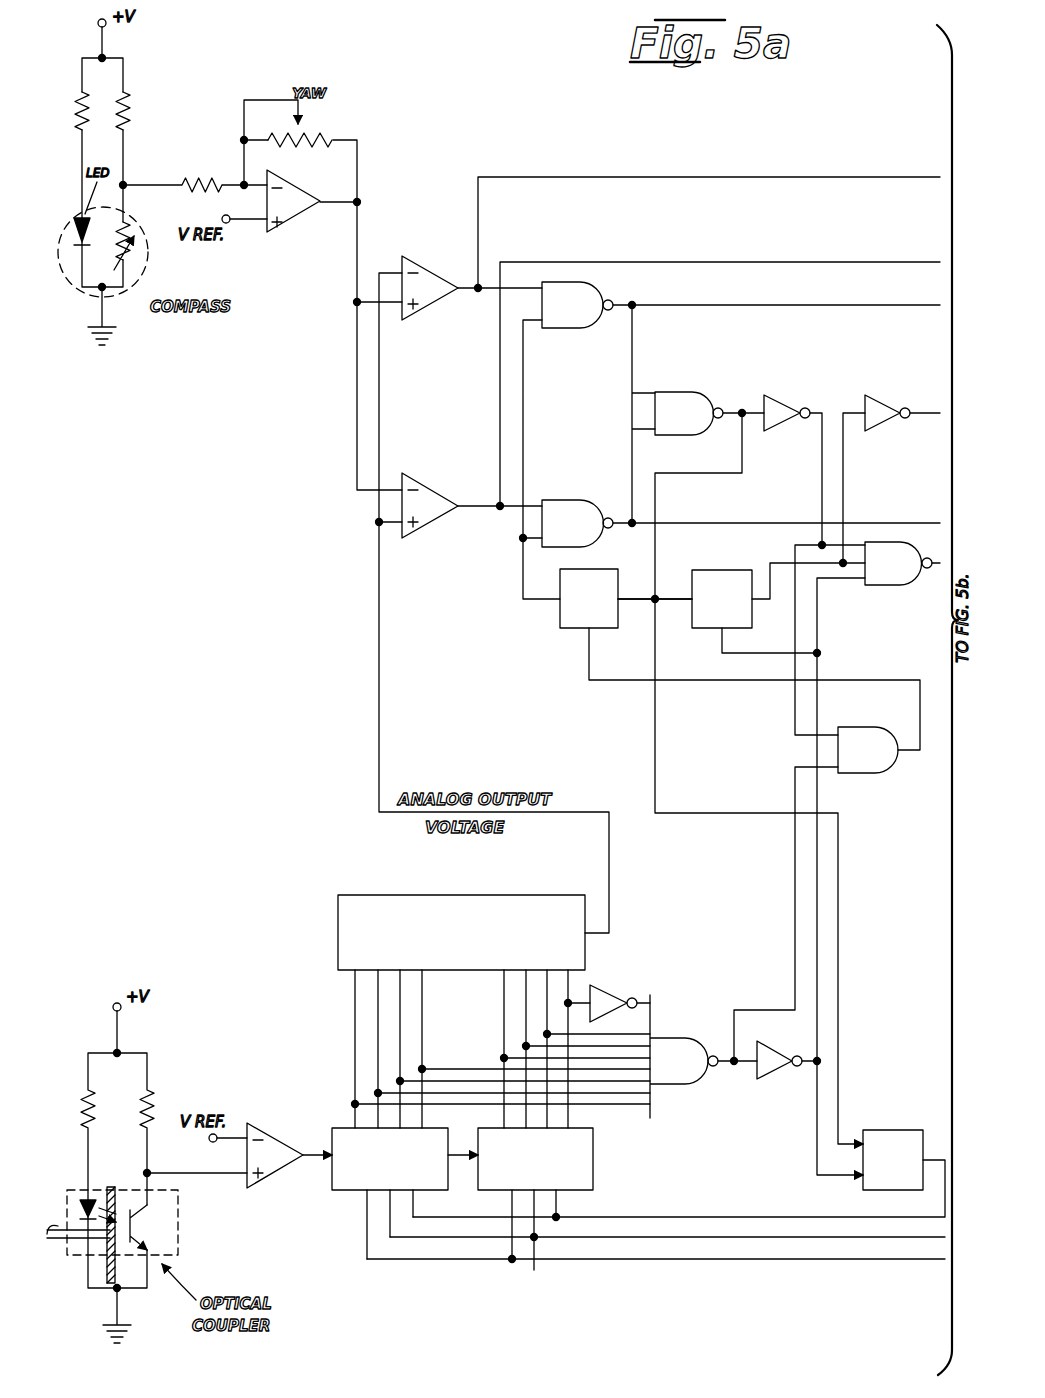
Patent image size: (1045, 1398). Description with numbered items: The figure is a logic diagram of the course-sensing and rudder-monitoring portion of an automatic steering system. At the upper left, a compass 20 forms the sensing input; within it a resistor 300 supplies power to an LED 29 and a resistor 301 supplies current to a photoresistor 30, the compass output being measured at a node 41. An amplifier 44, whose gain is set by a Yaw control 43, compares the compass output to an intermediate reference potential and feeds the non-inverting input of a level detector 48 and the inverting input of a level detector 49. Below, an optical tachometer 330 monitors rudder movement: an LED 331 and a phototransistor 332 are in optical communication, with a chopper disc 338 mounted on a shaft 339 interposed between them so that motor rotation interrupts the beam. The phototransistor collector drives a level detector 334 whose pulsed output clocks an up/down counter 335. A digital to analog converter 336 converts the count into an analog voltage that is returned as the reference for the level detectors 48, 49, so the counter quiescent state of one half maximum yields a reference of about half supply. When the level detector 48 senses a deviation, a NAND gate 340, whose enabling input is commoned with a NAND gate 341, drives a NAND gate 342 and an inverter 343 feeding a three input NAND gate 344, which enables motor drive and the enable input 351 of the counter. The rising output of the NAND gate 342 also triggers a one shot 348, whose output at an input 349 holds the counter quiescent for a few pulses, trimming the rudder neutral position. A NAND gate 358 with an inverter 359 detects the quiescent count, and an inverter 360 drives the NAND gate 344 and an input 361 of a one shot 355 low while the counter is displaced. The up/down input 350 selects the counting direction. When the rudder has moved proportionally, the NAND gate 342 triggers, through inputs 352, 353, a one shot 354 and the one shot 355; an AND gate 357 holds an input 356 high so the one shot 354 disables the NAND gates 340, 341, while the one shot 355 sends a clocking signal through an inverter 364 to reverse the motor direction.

The resistor 300 is at (84, 100).
The resistor 301 is at (135, 112).
The node 41 is at (127, 183).
The photoresistor 30 is at (137, 227).
The compass 20 is at (149, 263).
The LED 29 is at (69, 265).
The Yaw control 43 is at (308, 132).
The amplifier 44 is at (294, 232).
The level detector 48 is at (420, 256).
The level detector 49 is at (432, 488).
The NAND gate 340 is at (596, 292).
The NAND gate 341 is at (575, 500).
The NAND gate 342 is at (675, 391).
The inverter 343 is at (777, 394).
The inverter 364 is at (880, 394).
The three input NAND gate 344 is at (881, 586).
The one shot 354 is at (580, 569).
The input of one shot 353 is at (682, 597).
The one shot 355 is at (728, 570).
The input of one shot 352 is at (622, 603).
The input of one shot 356 is at (589, 645).
The input of one shot 361 is at (720, 650).
The AND gate 357 is at (862, 773).
The digital to analog converter 336 is at (548, 870).
The inverter 359 is at (606, 992).
The NAND gate 358 is at (696, 1038).
The inverter 360 is at (776, 1079).
The one shot 348 is at (905, 1130).
The level detector 334 is at (284, 1140).
The up/down counter 335 is at (503, 1190).
The input of counter 349 is at (558, 1216).
The up/down input 350 is at (534, 1262).
The enable input 351 is at (512, 1261).
The LED 331 is at (92, 1197).
The phototransistor 332 is at (138, 1222).
The optical tachometer 330 is at (186, 1233).
The shaft 339 is at (57, 1242).
The chopper disc 338 is at (107, 1285).